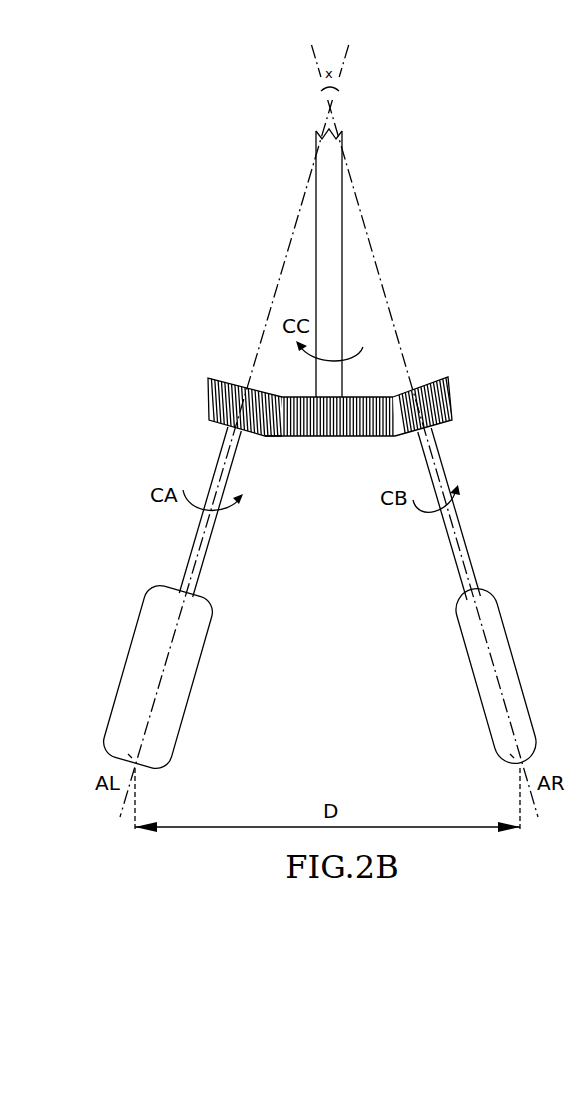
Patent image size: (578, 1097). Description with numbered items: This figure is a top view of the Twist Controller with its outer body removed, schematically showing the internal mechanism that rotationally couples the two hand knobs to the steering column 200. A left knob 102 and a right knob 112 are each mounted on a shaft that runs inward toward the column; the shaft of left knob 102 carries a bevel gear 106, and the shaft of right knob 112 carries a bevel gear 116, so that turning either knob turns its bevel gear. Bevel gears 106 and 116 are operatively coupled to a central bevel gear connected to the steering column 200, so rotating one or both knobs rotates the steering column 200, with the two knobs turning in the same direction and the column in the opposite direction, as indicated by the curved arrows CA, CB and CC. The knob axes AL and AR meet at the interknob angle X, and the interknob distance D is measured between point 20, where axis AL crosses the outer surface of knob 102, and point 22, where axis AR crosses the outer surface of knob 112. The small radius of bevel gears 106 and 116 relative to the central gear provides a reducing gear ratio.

The steering column 200 is at (316, 228).
The bevel gear 106 is at (208, 393).
The bevel gear 116 is at (452, 393).
The left knob 102 is at (128, 647).
The right knob 112 is at (460, 630).
The point 20 is at (128, 748).
The point 22 is at (508, 748).